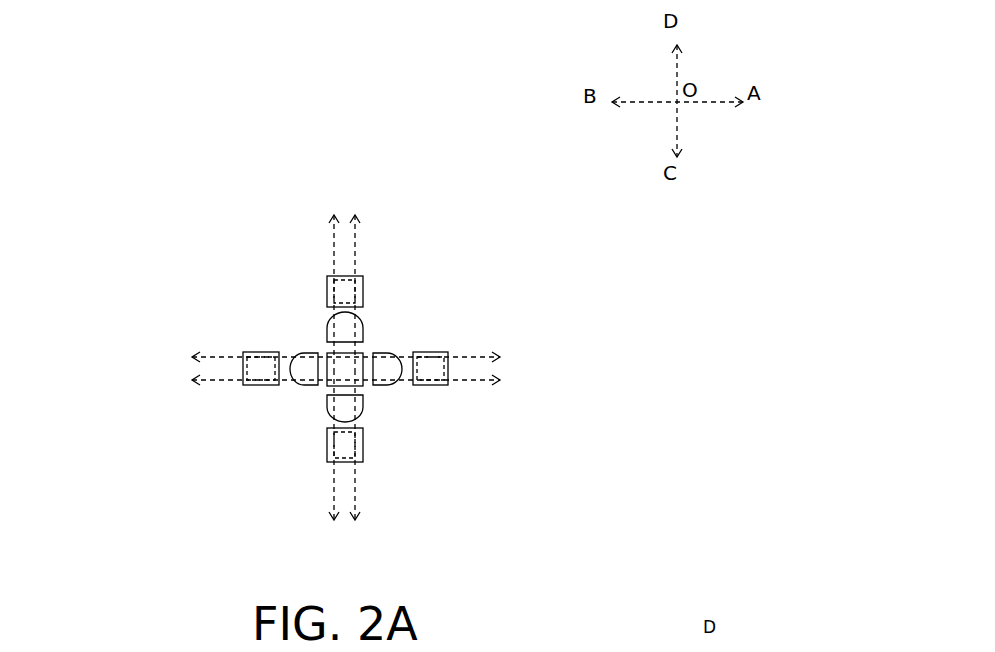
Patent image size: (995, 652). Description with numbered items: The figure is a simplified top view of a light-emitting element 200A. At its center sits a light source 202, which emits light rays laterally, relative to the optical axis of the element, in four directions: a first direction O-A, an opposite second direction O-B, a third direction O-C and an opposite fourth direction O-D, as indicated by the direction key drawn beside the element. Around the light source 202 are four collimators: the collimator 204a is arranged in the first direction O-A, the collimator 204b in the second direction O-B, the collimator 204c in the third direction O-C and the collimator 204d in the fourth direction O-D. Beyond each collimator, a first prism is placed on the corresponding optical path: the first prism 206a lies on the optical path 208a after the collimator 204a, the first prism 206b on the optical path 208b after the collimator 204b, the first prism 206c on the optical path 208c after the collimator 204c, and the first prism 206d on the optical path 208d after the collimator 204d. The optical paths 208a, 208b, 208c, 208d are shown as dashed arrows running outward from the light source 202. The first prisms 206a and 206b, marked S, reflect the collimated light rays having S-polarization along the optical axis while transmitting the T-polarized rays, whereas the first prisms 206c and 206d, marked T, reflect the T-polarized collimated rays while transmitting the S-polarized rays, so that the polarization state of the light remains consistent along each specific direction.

The light-emitting element 200A is at (293, 243).
The light source 202 is at (392, 426).
The collimator 204a is at (435, 404).
The collimator 204b is at (279, 321).
The collimator 204c is at (286, 415).
The collimator 204d is at (402, 298).
The first prism 206a is at (479, 331).
The first prism 206b is at (210, 331).
The first prism 206c is at (292, 470).
The first prism 206d is at (391, 250).
The optical path 208a is at (491, 361).
The optical path 208b is at (199, 368).
The optical path 208c is at (398, 481).
The optical path 208d is at (370, 249).